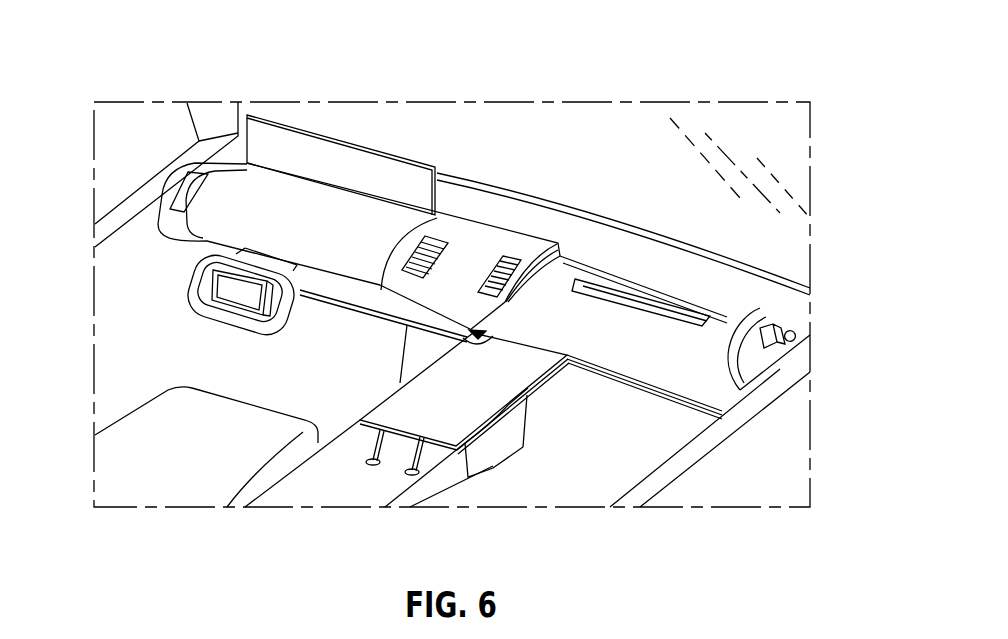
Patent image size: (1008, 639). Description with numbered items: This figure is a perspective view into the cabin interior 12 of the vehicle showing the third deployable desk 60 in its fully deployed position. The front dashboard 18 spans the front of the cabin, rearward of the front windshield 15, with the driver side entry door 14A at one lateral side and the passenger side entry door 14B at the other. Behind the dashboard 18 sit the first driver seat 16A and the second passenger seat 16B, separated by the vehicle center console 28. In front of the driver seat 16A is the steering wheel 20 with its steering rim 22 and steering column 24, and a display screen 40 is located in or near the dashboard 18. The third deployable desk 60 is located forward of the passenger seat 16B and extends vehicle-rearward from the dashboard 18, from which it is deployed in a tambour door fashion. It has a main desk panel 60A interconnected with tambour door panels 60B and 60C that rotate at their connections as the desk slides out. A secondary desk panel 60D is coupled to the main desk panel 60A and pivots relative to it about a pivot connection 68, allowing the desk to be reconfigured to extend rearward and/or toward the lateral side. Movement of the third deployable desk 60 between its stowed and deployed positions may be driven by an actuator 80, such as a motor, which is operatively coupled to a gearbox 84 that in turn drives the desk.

The cabin interior 12 is at (126, 358).
The driver side entry door 14A is at (190, 160).
The passenger side entry door 14B is at (745, 408).
The front windshield 15 is at (730, 142).
The first driver seat 16A is at (155, 433).
The second passenger seat 16B is at (557, 492).
The front dashboard 18 is at (495, 243).
The steering wheel 20 is at (165, 245).
The steering rim 22 is at (182, 284).
The steering column 24 is at (230, 296).
The vehicle center console 28 is at (343, 488).
The display screen 40 is at (367, 170).
The third deployable desk 60 is at (592, 250).
The main desk panel 60A is at (655, 335).
The tambour door panel 60B is at (708, 332).
The tambour door panel 60C is at (735, 343).
The secondary desk panel 60D is at (397, 450).
The pivot connection 68 is at (473, 334).
The actuator 80 is at (770, 338).
The gearbox 84 is at (765, 325).